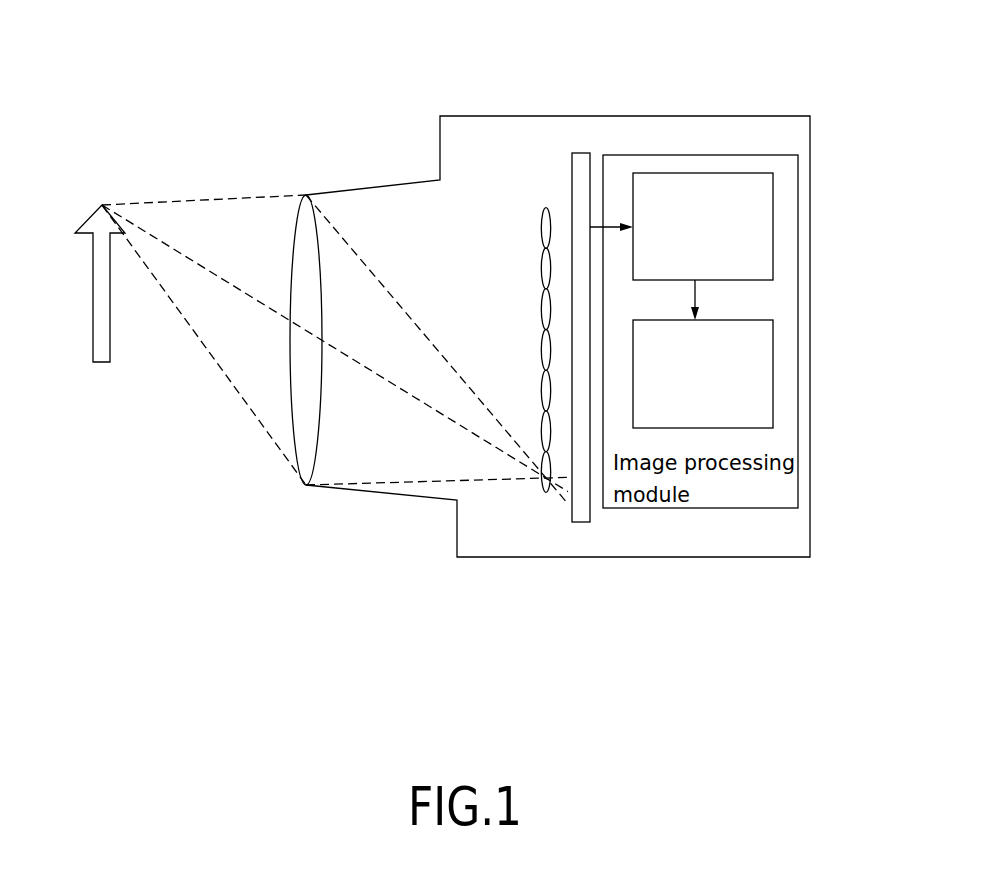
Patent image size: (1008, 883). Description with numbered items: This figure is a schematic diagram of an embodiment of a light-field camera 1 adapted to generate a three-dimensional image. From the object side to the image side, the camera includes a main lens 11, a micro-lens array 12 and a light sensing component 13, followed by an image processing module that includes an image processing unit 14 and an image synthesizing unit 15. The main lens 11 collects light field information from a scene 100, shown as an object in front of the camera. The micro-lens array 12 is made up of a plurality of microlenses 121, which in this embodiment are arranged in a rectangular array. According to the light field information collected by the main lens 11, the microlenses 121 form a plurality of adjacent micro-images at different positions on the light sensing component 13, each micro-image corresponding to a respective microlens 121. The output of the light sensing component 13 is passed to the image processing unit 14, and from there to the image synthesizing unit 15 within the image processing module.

The light-field camera 1 is at (560, 84).
The scene 100 is at (100, 345).
The main lens 11 is at (305, 258).
The micro-lens array 12 is at (518, 356).
The microlens 121 is at (541, 223).
The light sensing component 13 is at (598, 528).
The image processing unit 14 is at (773, 221).
The image synthesizing unit 15 is at (773, 352).